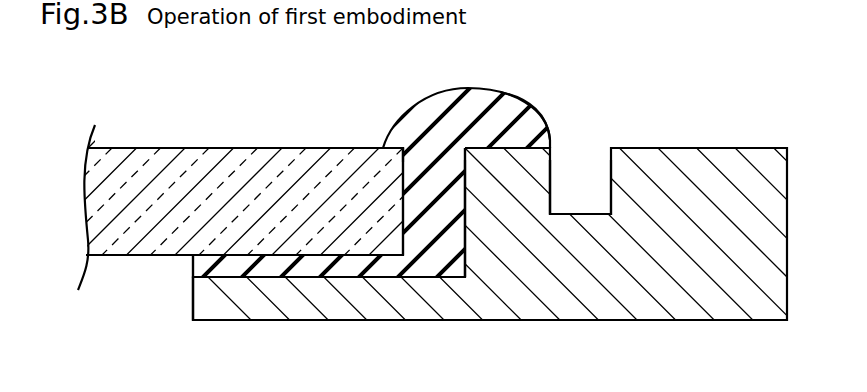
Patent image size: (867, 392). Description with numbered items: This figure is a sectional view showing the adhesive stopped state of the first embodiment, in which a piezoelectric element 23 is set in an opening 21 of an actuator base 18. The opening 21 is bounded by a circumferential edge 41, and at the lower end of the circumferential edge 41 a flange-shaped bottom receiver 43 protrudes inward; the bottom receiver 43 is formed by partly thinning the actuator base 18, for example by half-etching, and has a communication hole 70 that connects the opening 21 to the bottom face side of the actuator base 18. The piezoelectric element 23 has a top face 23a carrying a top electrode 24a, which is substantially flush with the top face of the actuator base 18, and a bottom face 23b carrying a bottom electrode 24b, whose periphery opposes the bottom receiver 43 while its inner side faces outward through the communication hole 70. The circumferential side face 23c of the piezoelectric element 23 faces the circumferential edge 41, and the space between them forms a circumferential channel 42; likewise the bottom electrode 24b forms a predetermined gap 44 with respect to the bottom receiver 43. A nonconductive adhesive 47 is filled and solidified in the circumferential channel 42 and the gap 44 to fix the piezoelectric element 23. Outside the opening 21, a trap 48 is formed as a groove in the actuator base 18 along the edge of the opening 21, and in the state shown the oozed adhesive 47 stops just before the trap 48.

The actuator base 18 is at (688, 165).
The opening 21 is at (460, 140).
The piezoelectric element 23 is at (150, 147).
The top face 23a is at (343, 147).
The bottom face 23b is at (330, 263).
The circumferential side face 23c is at (403, 162).
The top electrode 24a is at (275, 147).
The bottom electrode 24b is at (114, 257).
The circumferential edge 41 is at (460, 200).
The circumferential channel 42 is at (428, 190).
The bottom receiver 43 is at (263, 306).
The gap 44 is at (192, 268).
The nonconductive adhesive 47 is at (510, 107).
The trap 48 is at (610, 173).
The communication hole 70 is at (192, 302).